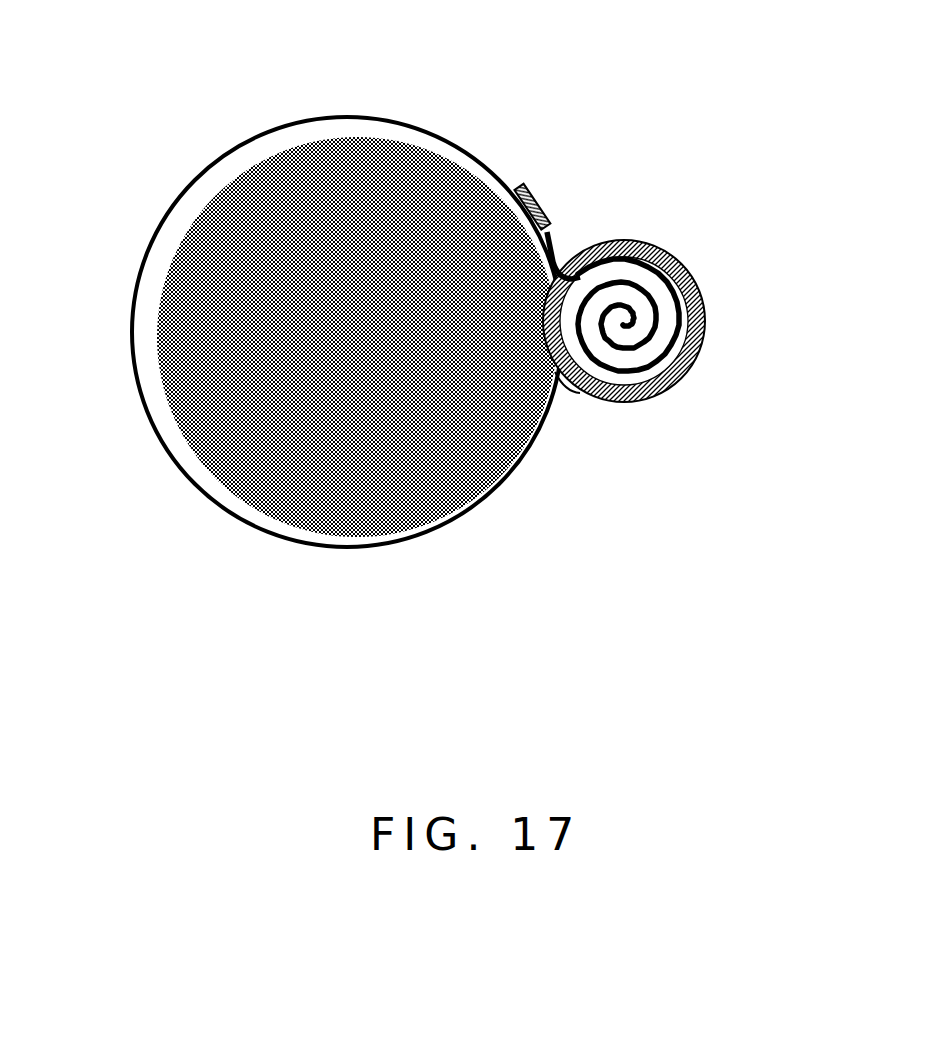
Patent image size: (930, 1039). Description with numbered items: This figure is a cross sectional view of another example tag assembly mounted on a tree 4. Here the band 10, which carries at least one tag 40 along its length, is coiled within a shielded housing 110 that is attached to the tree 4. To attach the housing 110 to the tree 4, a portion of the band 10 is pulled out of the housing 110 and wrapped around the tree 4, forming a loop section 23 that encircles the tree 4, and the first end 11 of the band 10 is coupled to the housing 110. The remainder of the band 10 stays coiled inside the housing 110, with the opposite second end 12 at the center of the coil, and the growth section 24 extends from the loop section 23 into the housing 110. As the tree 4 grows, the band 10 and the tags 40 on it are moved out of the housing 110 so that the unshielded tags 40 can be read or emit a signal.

The band 10 is at (253, 134).
The loop section 23 is at (136, 252).
The tree 4 is at (260, 383).
The tag 40 is at (535, 198).
The housing 110 is at (662, 384).
The first end 11 is at (561, 378).
The growth section 24 is at (678, 279).
The second end 12 is at (622, 322).